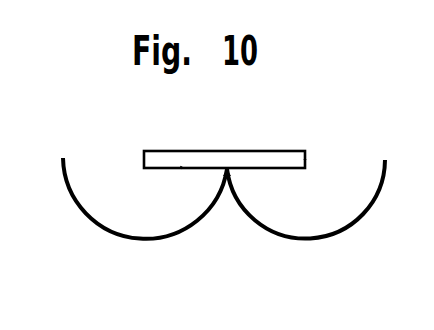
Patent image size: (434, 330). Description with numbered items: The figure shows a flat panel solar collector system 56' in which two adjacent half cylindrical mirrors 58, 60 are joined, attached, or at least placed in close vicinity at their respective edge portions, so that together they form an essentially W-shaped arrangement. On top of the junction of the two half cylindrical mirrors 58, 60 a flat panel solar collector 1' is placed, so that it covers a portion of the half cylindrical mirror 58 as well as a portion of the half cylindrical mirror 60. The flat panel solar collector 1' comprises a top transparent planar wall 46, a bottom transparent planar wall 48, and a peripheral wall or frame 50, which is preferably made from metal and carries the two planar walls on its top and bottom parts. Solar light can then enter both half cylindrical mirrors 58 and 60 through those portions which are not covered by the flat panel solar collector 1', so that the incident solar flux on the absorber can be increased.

The flat panel solar collector 1' is at (187, 115).
The top transparent planar wall 46 is at (259, 150).
The bottom transparent planar wall 48 is at (178, 170).
The peripheral wall or frame 50 is at (306, 158).
The flat panel solar collector system 56' is at (208, 232).
The half cylindrical mirror 58 is at (93, 222).
The half cylindrical mirror 60 is at (343, 227).